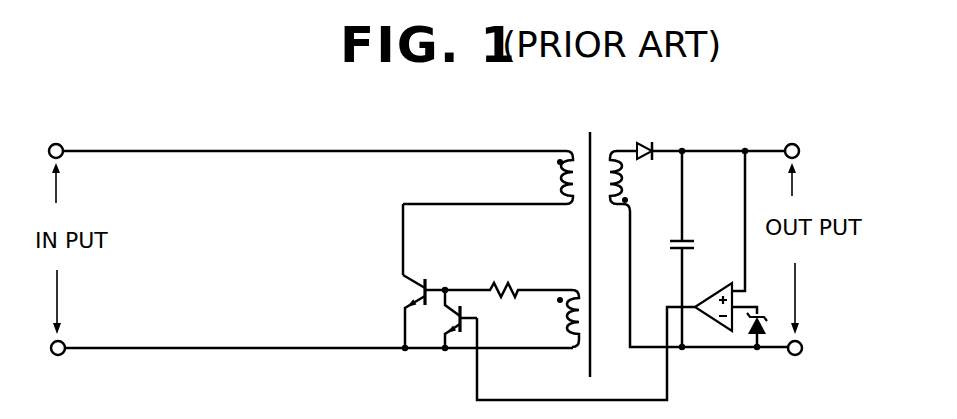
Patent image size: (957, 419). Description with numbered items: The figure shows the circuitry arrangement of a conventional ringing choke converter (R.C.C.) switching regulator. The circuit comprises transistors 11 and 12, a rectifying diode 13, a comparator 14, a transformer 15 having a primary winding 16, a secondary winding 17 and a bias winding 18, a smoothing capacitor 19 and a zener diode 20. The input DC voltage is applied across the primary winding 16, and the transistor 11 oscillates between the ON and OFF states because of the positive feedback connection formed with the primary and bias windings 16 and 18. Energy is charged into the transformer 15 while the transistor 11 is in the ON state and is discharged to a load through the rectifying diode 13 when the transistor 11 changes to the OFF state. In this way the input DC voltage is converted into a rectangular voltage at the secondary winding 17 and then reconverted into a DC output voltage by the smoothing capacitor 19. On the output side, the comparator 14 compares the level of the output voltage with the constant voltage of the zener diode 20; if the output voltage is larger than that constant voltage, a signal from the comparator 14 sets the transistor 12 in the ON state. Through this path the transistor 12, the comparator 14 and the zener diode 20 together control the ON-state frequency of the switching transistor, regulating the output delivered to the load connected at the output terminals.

The transistor 11 is at (413, 275).
The transistor 12 is at (457, 338).
The rectifying diode 13 is at (651, 139).
The comparator 14 is at (711, 290).
The transformer 15 is at (589, 138).
The primary winding 16 is at (555, 207).
The secondary winding 17 is at (628, 180).
The bias winding 18 is at (569, 333).
The smoothing capacitor 19 is at (688, 232).
The zener diode 20 is at (748, 352).